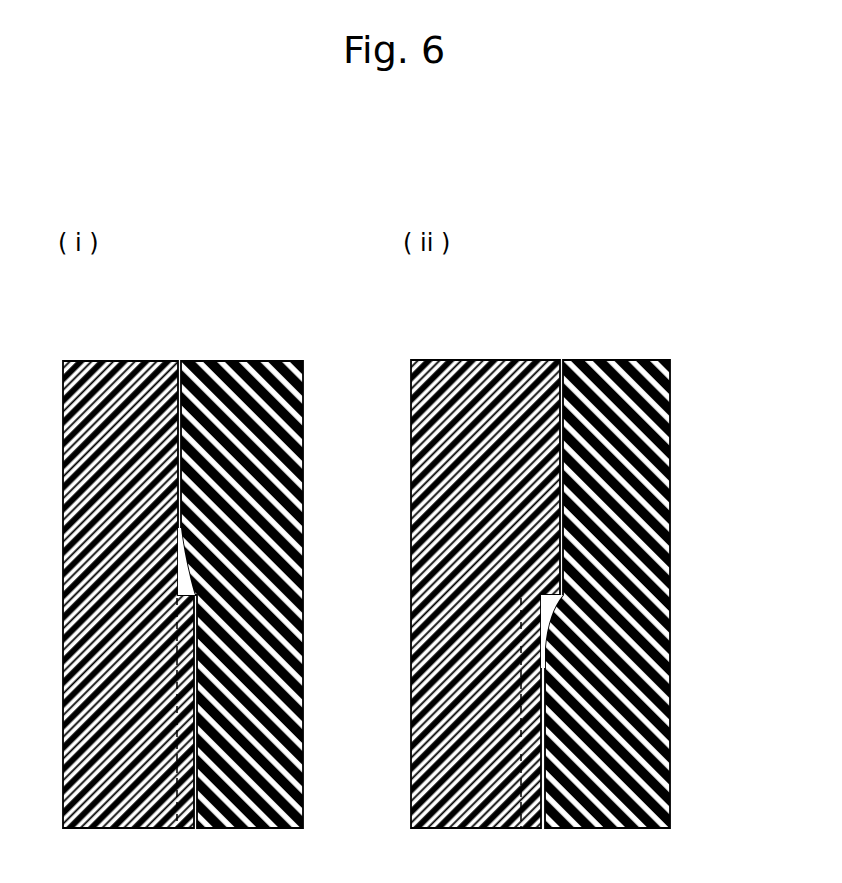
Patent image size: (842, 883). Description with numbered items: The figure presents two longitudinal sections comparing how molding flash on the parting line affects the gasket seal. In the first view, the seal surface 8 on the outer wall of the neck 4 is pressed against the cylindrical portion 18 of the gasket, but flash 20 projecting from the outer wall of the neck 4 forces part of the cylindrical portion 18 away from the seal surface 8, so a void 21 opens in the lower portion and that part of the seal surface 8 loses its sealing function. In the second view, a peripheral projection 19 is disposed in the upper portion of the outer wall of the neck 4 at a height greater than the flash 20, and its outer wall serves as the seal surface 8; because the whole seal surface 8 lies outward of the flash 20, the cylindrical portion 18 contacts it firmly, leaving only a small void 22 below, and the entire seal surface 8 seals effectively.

The neck 4 is at (102, 348).
The cylindrical portion 18 is at (250, 418).
The seal surface 8 is at (173, 514).
The peripheral projection 19 is at (554, 503).
The flash 20 is at (188, 683).
The wedge-shaped gap 21 is at (184, 569).
The wedge-shaped gap 22 is at (546, 604).